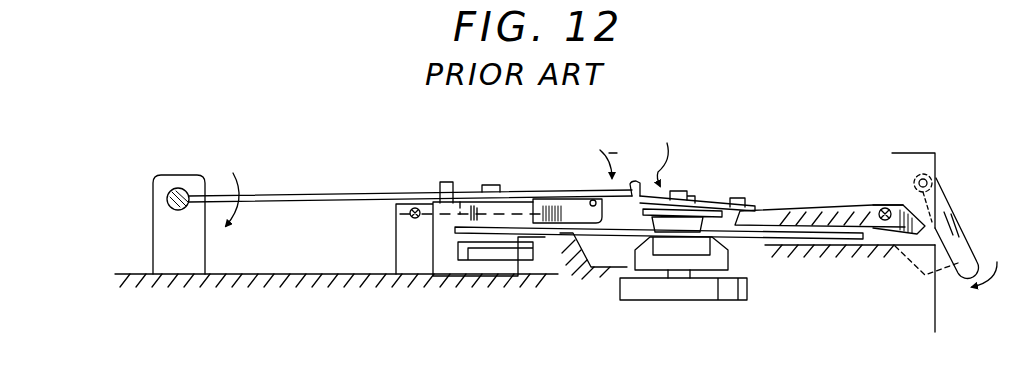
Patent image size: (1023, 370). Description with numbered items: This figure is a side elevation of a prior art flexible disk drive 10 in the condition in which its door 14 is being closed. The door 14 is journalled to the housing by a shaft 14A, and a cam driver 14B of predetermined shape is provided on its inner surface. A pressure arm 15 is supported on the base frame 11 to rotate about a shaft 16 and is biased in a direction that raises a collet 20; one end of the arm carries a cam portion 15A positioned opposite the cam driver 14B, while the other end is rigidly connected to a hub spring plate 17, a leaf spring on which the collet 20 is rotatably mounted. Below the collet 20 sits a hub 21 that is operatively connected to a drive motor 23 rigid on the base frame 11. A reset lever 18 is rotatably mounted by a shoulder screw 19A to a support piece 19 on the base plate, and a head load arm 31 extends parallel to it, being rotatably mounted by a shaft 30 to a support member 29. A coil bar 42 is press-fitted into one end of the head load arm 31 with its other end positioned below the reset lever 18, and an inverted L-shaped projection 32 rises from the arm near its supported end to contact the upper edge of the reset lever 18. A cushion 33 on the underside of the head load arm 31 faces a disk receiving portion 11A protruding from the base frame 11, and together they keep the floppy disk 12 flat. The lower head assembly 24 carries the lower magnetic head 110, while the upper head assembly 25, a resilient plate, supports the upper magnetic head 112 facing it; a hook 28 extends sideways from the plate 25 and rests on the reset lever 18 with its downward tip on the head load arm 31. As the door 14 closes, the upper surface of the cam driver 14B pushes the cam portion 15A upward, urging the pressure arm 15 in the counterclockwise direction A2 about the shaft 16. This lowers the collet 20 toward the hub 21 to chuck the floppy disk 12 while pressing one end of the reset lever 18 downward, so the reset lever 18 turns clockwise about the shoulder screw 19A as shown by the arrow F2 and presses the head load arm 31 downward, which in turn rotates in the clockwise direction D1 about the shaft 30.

The flexible disk drive 10 is at (733, 110).
The base frame 11 is at (254, 326).
The disk receiving portion 11A is at (553, 235).
The floppy disk 12 is at (828, 239).
The door 14 is at (957, 215).
The shaft 14A is at (923, 177).
The cam driver 14B is at (947, 267).
The pressure arm 15 is at (812, 208).
The cam portion 15A is at (905, 236).
The shaft 16 is at (885, 208).
The hub spring plate 17 is at (735, 205).
The reset lever 18 is at (345, 192).
The support piece 19 is at (188, 257).
The shoulder screw 19A is at (180, 188).
The collet 20 is at (652, 222).
The hub 21 is at (718, 262).
The drive motor 23 is at (738, 287).
The lower head assembly 24 is at (473, 256).
The upper head assembly 25 is at (547, 234).
The hook 28 is at (493, 185).
The support member 29 is at (405, 258).
The shaft 30 is at (410, 214).
The head load arm 31 is at (547, 212).
The inverted L-shaped projection 32 is at (443, 182).
The cushion 33 is at (560, 208).
The coil bar 42 is at (590, 199).
The lower magnetic head 110 is at (490, 235).
The upper magnetic head 112 is at (478, 214).
The arrow F2 is at (247, 188).
The clockwise direction D1 is at (624, 161).
The counterclockwise direction A2 is at (670, 153).